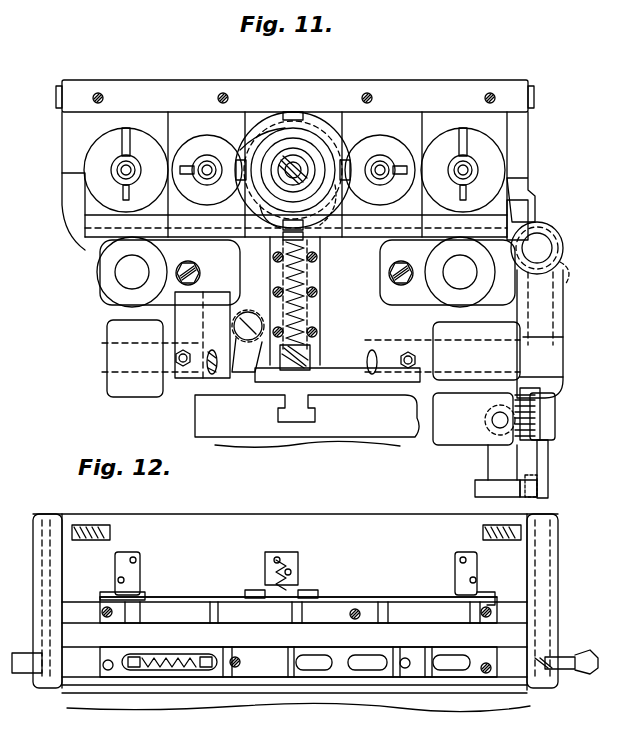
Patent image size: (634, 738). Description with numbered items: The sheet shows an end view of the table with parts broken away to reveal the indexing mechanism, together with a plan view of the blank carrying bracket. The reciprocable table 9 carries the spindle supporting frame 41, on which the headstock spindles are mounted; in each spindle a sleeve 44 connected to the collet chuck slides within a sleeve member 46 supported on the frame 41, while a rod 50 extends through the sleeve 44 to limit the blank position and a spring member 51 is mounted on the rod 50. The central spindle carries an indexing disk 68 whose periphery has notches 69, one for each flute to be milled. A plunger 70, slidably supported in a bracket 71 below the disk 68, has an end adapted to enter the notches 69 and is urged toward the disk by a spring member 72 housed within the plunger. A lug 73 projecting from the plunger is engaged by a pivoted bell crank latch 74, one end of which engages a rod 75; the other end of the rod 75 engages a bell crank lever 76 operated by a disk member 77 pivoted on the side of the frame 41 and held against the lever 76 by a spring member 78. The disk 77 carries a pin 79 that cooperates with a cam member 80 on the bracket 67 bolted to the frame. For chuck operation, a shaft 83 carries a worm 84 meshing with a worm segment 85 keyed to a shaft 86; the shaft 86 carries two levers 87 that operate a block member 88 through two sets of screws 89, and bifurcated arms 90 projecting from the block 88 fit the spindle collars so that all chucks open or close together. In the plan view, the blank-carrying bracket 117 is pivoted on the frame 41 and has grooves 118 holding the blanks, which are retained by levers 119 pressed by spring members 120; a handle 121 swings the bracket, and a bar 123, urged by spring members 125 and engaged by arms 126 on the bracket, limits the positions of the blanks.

In FIG. 11, the spindle supporting frame 41 is at (426, 96).
In FIG. 12, the spindle supporting frame 41 is at (278, 540).
In FIG. 11, the sleeve member 46 is at (294, 162).
In FIG. 11, the indexing disk 68 is at (300, 150).
In FIG. 11, the sleeve 44 is at (312, 158).
In FIG. 11, the spring member 51 is at (268, 163).
In FIG. 11, the rod 50 is at (282, 200).
In FIG. 11, the notches 69 is at (316, 202).
In FIG. 11, the plunger 70 is at (304, 236).
In FIG. 11, the bifurcated arms 90 is at (92, 207).
In FIG. 11, the block member 88 is at (95, 248).
In FIG. 11, the screws 89 is at (198, 270).
In FIG. 11, the spring member 72 is at (278, 262).
In FIG. 11, the bracket 71 is at (282, 278).
In FIG. 11, the lug 73 is at (310, 325).
In FIG. 11, the levers 87 is at (185, 368).
In FIG. 11, the shaft 86 is at (208, 368).
In FIG. 11, the latch 74 is at (245, 374).
In FIG. 11, the rod 75 is at (345, 382).
In FIG. 11, the reciprocable table 9 is at (260, 443).
In FIG. 11, the bell crank lever 76 is at (492, 402).
In FIG. 11, the shaft 83 is at (540, 248).
In FIG. 11, the worm 84 is at (562, 262).
In FIG. 11, the worm segment 85 is at (563, 378).
In FIG. 11, the spring member 78 is at (542, 430).
In FIG. 11, the disk member 77 is at (548, 468).
In FIG. 11, the pin 79 is at (548, 486).
In FIG. 11, the cam member 80 is at (532, 497).
In FIG. 11, the bracket 67 is at (478, 488).
In FIG. 12, the blank-carrying bracket 117 is at (226, 610).
In FIG. 12, the grooves 118 is at (135, 662).
In FIG. 12, the levers 119 is at (140, 680).
In FIG. 12, the spring members 120 is at (170, 672).
In FIG. 12, the handle 121 is at (588, 652).
In FIG. 12, the bar 123 is at (372, 598).
In FIG. 12, the spring members 125 is at (298, 570).
In FIG. 12, the arms 126 is at (105, 610).